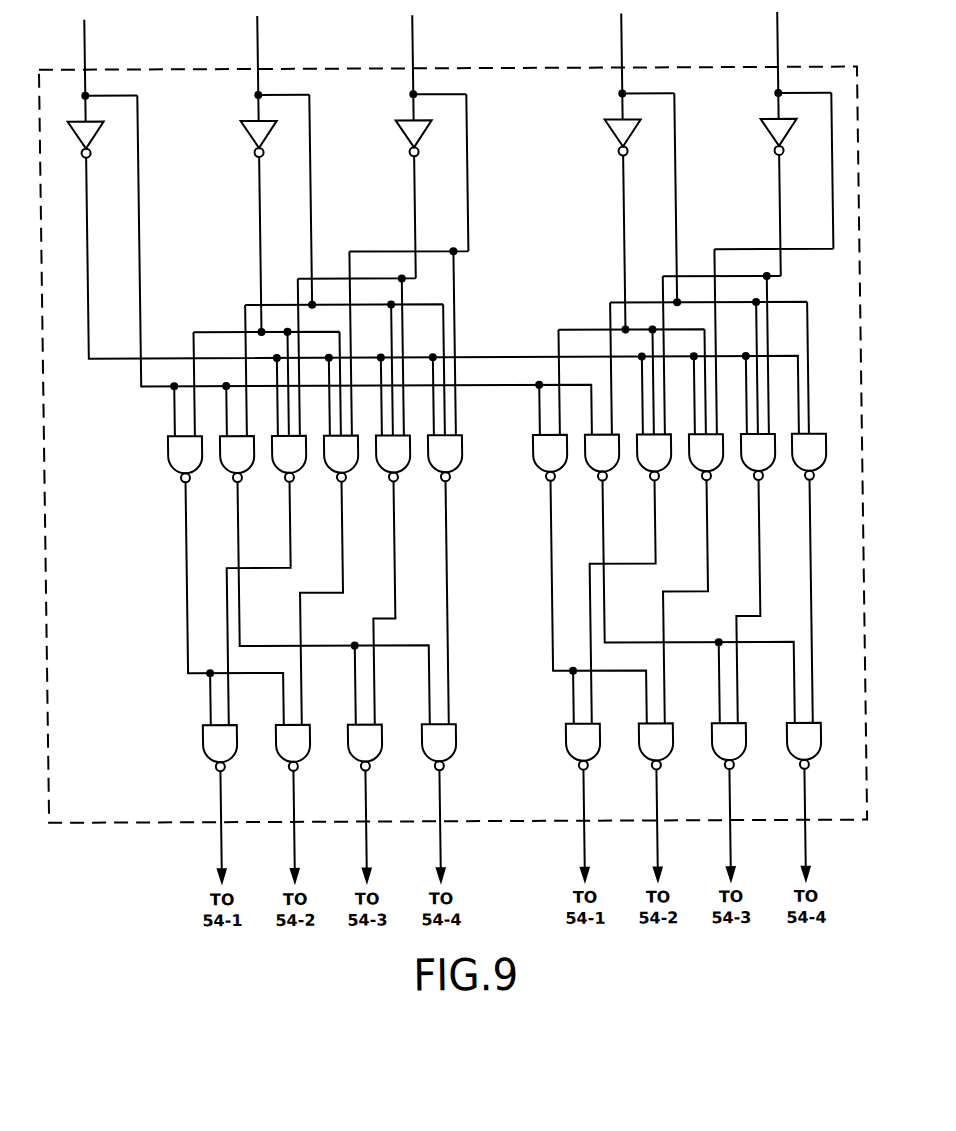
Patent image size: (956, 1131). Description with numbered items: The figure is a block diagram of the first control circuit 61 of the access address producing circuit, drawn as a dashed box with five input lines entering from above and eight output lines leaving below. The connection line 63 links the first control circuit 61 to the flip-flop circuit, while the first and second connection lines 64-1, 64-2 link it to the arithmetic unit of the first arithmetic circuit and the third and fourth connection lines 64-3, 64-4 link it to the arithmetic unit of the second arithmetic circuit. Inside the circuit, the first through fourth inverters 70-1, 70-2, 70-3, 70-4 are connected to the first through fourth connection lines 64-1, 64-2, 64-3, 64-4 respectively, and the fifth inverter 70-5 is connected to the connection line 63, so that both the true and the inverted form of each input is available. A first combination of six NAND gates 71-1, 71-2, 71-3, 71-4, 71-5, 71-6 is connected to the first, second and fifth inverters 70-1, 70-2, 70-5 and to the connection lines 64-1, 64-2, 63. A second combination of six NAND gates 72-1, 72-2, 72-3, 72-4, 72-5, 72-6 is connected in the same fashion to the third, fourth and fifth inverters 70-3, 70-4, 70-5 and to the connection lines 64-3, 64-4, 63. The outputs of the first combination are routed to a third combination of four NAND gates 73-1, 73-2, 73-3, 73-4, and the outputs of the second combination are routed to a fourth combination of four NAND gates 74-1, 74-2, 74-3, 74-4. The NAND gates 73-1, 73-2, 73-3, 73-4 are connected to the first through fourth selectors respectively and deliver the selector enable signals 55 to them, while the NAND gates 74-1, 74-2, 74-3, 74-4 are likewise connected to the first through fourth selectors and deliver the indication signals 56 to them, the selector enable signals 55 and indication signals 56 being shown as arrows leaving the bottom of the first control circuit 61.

The first control circuit 61 is at (107, 823).
The connection line 63 is at (84, 46).
The first connection line 64-1 is at (412, 45).
The second connection line 64-2 is at (257, 46).
The third connection line 64-3 is at (777, 44).
The fourth connection line 64-4 is at (621, 44).
The first inverter 70-1 is at (406, 137).
The second inverter 70-2 is at (251, 137).
The third inverter 70-3 is at (771, 137).
The fourth inverter 70-4 is at (615, 137).
The fifth inverter 70-5 is at (78, 137).
The first NAND gate of the first combination 71-1 is at (174, 474).
The second NAND gate of the first combination 71-2 is at (226, 474).
The third NAND gate of the first combination 71-3 is at (278, 474).
The fourth NAND gate of the first combination 71-4 is at (330, 474).
The fifth NAND gate of the first combination 71-5 is at (382, 474).
The sixth NAND gate of the first combination 71-6 is at (434, 474).
The first NAND gate of the second combination 72-1 is at (539, 474).
The second NAND gate of the second combination 72-2 is at (591, 474).
The third NAND gate of the second combination 72-3 is at (643, 474).
The fourth NAND gate of the second combination 72-4 is at (695, 474).
The fifth NAND gate of the second combination 72-5 is at (747, 474).
The sixth NAND gate of the second combination 72-6 is at (798, 474).
The first NAND gate of the third combination 73-1 is at (201, 762).
The second NAND gate of the third combination 73-2 is at (274, 762).
The third NAND gate of the third combination 73-3 is at (346, 762).
The fourth NAND gate of the third combination 73-4 is at (420, 762).
The first NAND gate of the fourth combination 74-1 is at (564, 762).
The second NAND gate of the fourth combination 74-2 is at (637, 762).
The third NAND gate of the fourth combination 74-3 is at (710, 762).
The fourth NAND gate of the fourth combination 74-4 is at (785, 762).
The selector enable signals 55 is at (453, 852).
The indication signals 56 is at (818, 852).